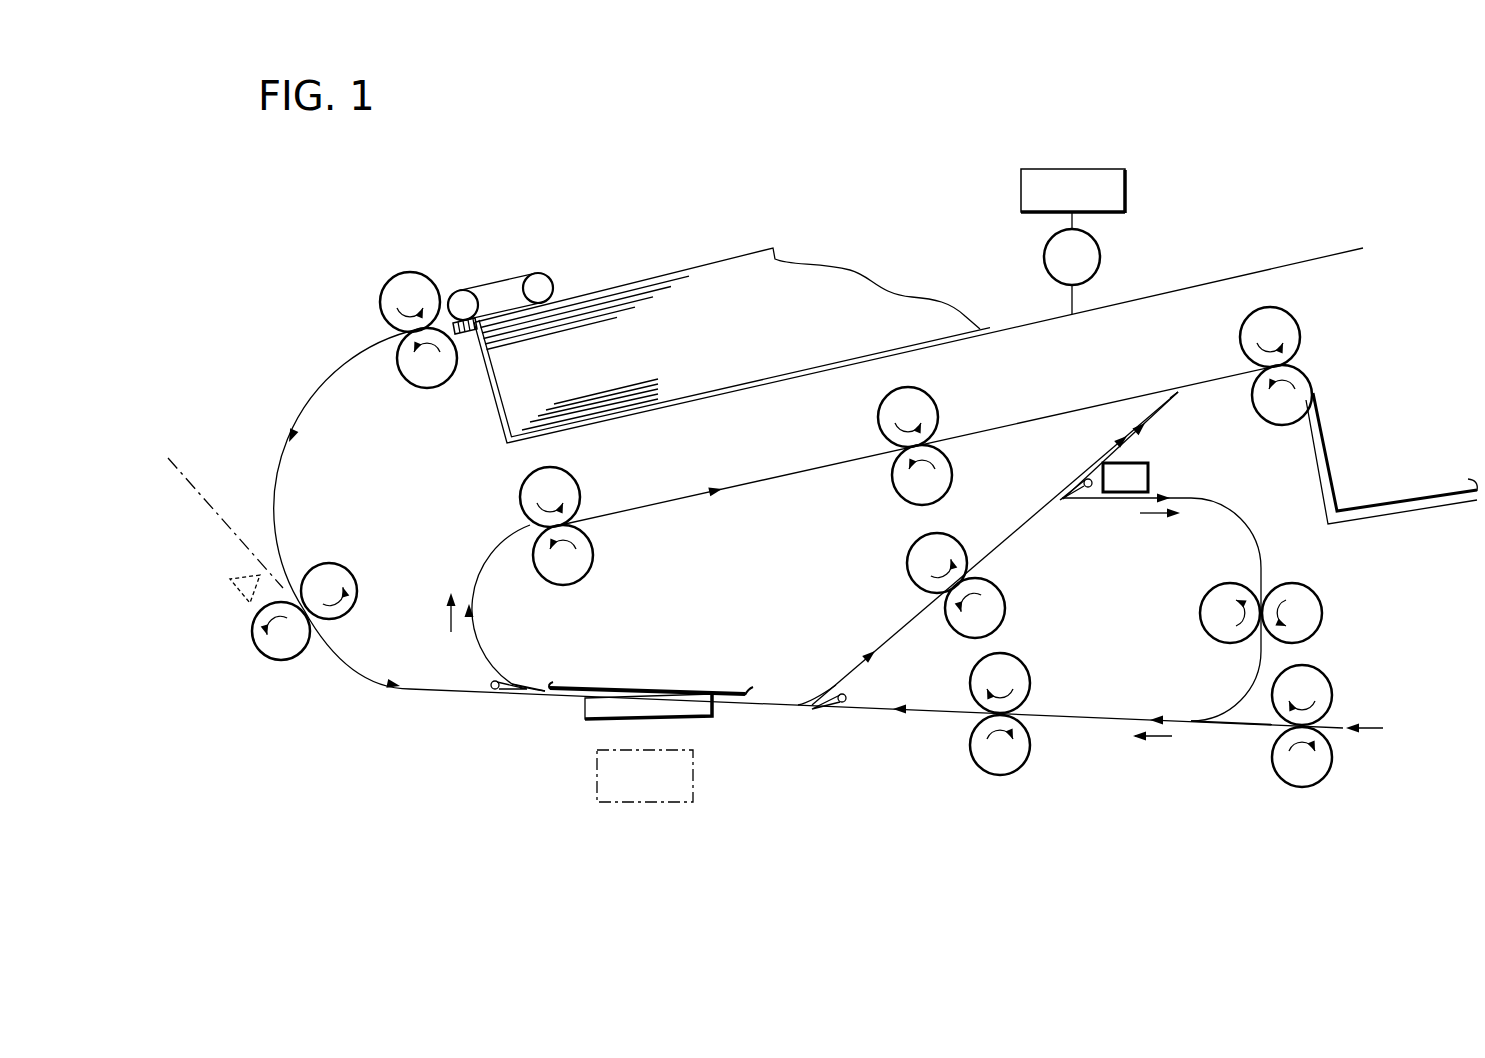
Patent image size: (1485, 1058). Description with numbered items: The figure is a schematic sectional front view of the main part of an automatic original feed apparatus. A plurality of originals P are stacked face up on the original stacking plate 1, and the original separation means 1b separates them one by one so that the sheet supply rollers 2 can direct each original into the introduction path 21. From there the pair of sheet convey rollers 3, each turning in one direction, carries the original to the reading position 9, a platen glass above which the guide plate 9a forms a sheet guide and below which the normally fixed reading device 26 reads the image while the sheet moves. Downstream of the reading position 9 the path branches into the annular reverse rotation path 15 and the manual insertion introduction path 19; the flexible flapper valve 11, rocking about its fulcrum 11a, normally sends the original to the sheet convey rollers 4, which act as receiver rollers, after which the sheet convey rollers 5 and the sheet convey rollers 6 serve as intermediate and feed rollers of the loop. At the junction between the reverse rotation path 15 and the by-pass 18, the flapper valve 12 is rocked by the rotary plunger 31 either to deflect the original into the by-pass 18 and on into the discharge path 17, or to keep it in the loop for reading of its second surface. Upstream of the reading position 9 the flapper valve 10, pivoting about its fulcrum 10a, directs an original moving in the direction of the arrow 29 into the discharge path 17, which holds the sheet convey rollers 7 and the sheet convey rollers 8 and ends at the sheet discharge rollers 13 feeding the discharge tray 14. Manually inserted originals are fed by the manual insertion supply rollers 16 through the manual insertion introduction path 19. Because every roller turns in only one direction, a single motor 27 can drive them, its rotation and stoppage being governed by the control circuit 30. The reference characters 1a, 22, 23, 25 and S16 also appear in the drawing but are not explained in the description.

The original stacking plate 1 is at (627, 419).
The pick-up roller 1a is at (497, 281).
The original separation means 1b is at (470, 336).
The original P is at (601, 287).
The sheet supply rollers 2 is at (418, 281).
The sheet convey rollers 3 is at (338, 590).
The sheet convey rollers 4 is at (953, 548).
The sheet convey rollers 5 is at (1305, 606).
The sheet convey rollers 6 is at (1000, 672).
The sheet convey rollers 7 is at (560, 480).
The sheet convey rollers 8 is at (920, 403).
The reading position 9 is at (712, 714).
The guide plate 9a is at (648, 686).
The flapper valve 10 is at (500, 691).
The fulcrum 10a is at (513, 684).
The flapper valve 11 is at (832, 704).
The fulcrum 11a is at (822, 688).
The flapper valve 12 is at (1077, 486).
The sheet discharge rollers 13 is at (1278, 322).
The discharge tray 14 is at (1373, 512).
The reverse rotation path 15 is at (1204, 499).
The manual insertion supply rollers 16 is at (1300, 683).
The discharge path 17 is at (757, 482).
The by-pass 18 is at (1163, 405).
The manual insertion introduction path 19 is at (1240, 723).
The introduction path 21 is at (274, 497).
The conveying direction 22 is at (299, 433).
The conveying path 23 is at (866, 655).
The conveying path 25 is at (1128, 420).
The reading device 26 is at (675, 803).
The motor 27 is at (1150, 738).
The arrow 29 is at (451, 632).
The control circuit 30 is at (1128, 193).
The rotary plunger 31 is at (1149, 477).
The sensor signal S16 is at (238, 598).